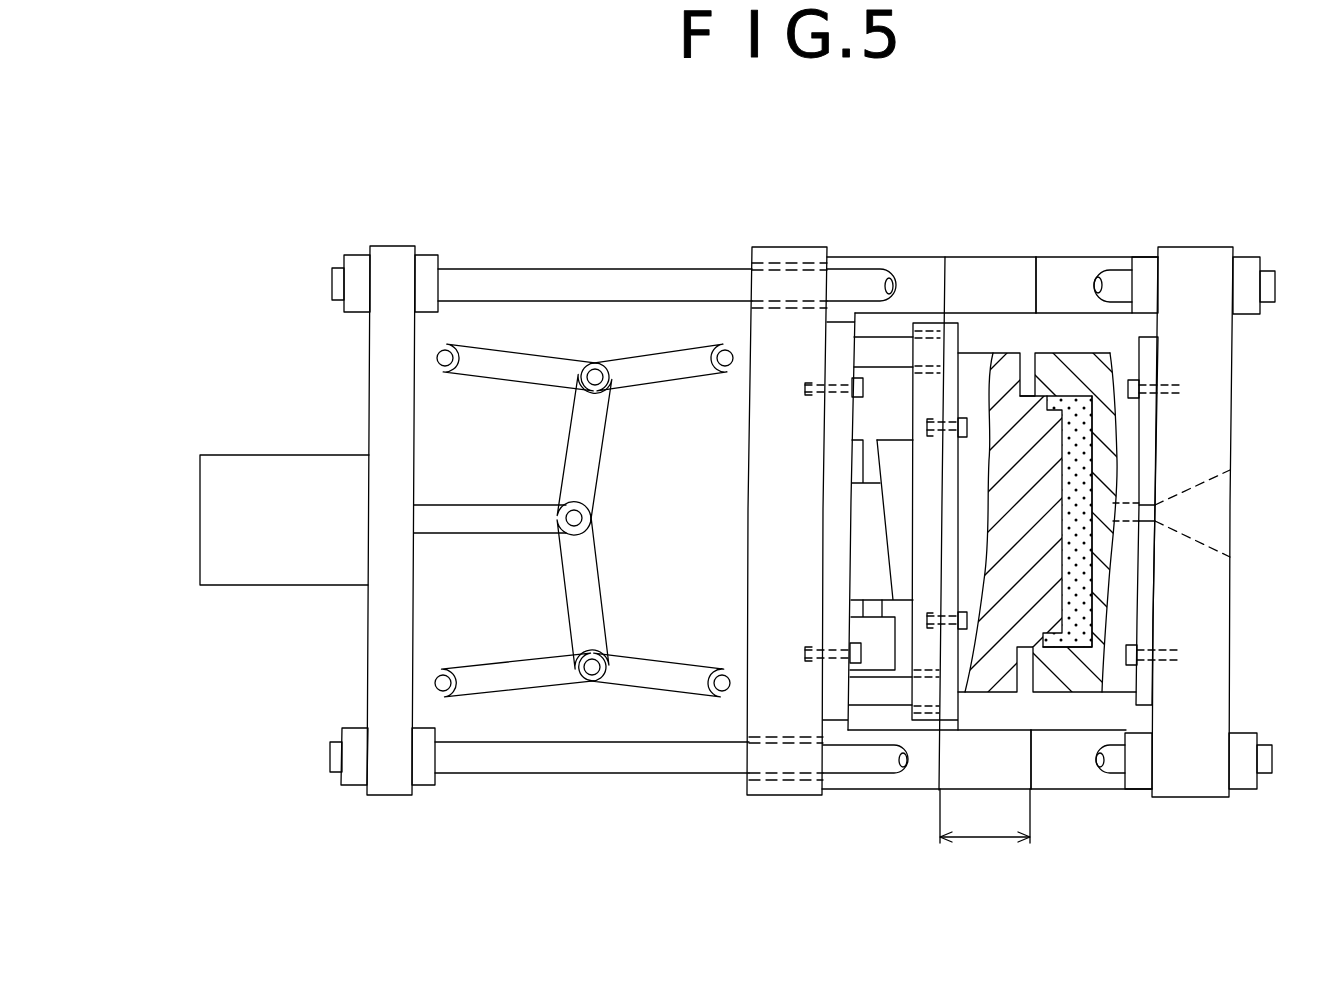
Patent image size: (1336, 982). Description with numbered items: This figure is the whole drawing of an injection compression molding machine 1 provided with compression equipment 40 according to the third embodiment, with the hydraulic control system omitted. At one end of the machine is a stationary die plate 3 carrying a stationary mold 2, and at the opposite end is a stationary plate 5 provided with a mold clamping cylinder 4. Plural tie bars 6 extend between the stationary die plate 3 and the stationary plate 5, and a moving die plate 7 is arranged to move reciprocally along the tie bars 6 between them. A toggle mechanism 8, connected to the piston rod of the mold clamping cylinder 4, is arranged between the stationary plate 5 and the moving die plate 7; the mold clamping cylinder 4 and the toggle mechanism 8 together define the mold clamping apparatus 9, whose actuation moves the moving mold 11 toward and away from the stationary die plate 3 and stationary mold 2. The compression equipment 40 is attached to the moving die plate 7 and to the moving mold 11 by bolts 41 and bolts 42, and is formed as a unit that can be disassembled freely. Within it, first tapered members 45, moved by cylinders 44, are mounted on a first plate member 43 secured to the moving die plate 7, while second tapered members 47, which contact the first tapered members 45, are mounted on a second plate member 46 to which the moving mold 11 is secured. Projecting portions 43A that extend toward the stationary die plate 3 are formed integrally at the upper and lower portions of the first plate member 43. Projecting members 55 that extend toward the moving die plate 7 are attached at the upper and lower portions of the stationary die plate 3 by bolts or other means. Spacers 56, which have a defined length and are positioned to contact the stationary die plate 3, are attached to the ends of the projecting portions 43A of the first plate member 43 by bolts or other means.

The injection compression molding machine 1 is at (808, 198).
The stationary mold 2 is at (1078, 350).
The stationary die plate 3 is at (1203, 258).
The mold clamping cylinder 4 is at (240, 454).
The stationary plate 5 is at (388, 262).
The tie bars 6 is at (641, 277).
The moving die plate 7 is at (762, 259).
The toggle mechanism 8 is at (515, 356).
The mold clamping apparatus 9 is at (495, 682).
The moving mold 11 is at (975, 358).
The compression equipment 40 is at (893, 337).
The bolts 41 is at (855, 402).
The bolts 42 is at (1020, 350).
The first plate member 43 is at (830, 492).
The projecting portions 43A is at (875, 257).
The cylinders 44 is at (862, 632).
The first tapered members 45 is at (862, 548).
The second plate member 46 is at (928, 327).
The second tapered members 47 is at (890, 450).
The projecting members 55 is at (1100, 262).
The spacers 56 is at (1007, 347).